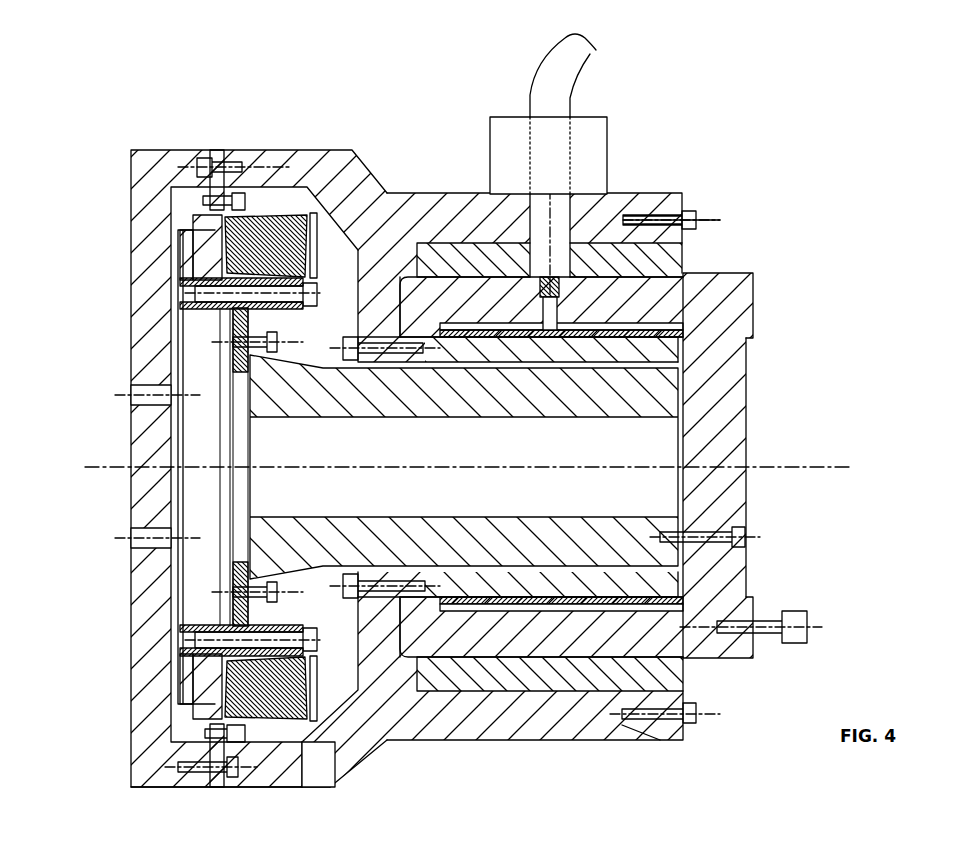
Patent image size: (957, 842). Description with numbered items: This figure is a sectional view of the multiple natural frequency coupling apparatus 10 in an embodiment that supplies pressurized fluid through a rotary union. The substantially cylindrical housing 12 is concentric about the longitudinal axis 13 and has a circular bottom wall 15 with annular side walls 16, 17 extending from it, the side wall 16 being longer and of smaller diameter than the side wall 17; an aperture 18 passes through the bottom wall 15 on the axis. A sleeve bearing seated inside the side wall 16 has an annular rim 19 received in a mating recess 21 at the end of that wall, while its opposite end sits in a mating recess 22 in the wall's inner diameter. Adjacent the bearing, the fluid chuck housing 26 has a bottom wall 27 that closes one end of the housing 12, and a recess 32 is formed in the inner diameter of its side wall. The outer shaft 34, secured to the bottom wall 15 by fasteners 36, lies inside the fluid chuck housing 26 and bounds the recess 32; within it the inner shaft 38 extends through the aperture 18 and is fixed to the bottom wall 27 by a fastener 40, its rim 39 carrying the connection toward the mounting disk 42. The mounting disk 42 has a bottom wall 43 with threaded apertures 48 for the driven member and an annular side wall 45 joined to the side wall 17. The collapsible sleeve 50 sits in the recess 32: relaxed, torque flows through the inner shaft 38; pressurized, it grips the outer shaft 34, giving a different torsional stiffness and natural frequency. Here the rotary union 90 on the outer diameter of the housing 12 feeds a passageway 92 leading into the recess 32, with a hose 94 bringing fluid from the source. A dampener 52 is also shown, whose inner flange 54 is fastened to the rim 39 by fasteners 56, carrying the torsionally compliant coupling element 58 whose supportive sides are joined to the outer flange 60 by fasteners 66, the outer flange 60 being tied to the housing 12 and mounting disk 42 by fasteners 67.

The multiple natural frequency coupling apparatus 10 is at (820, 216).
The housing 12 is at (447, 193).
The longitudinal axis 13 is at (106, 480).
The bottom wall 15 is at (372, 688).
The annular side wall 16 is at (510, 742).
The annular side wall 17 is at (332, 789).
The aperture 18 is at (371, 568).
The annular rim 19 is at (690, 726).
The mating recess 21 is at (656, 727).
The mating recess 22 is at (425, 692).
The fluid chuck housing 26 is at (740, 273).
The bottom wall 27 is at (748, 350).
The recess 32 is at (610, 333).
The outer shaft 34 is at (395, 337).
The fasteners 36 is at (345, 592).
The inner shaft 38 is at (312, 360).
The rim 39 is at (233, 628).
The fastener 40 is at (747, 540).
The mounting disk 42 is at (131, 305).
The bottom wall 43 is at (131, 717).
The annular side wall 45 is at (150, 789).
The threaded apertures 48 is at (146, 395).
The collapsible sleeve 50 is at (482, 326).
The dampener 52 is at (268, 740).
The inner flange 54 is at (233, 345).
The fasteners 56 is at (233, 590).
The torsionally compliant coupling element 58 is at (270, 222).
The outer flange 60 is at (217, 150).
The fasteners 66 is at (185, 735).
The fasteners 67 is at (218, 789).
The rotary union 90 is at (508, 117).
The passageway 92 is at (565, 205).
The hose 94 is at (596, 50).